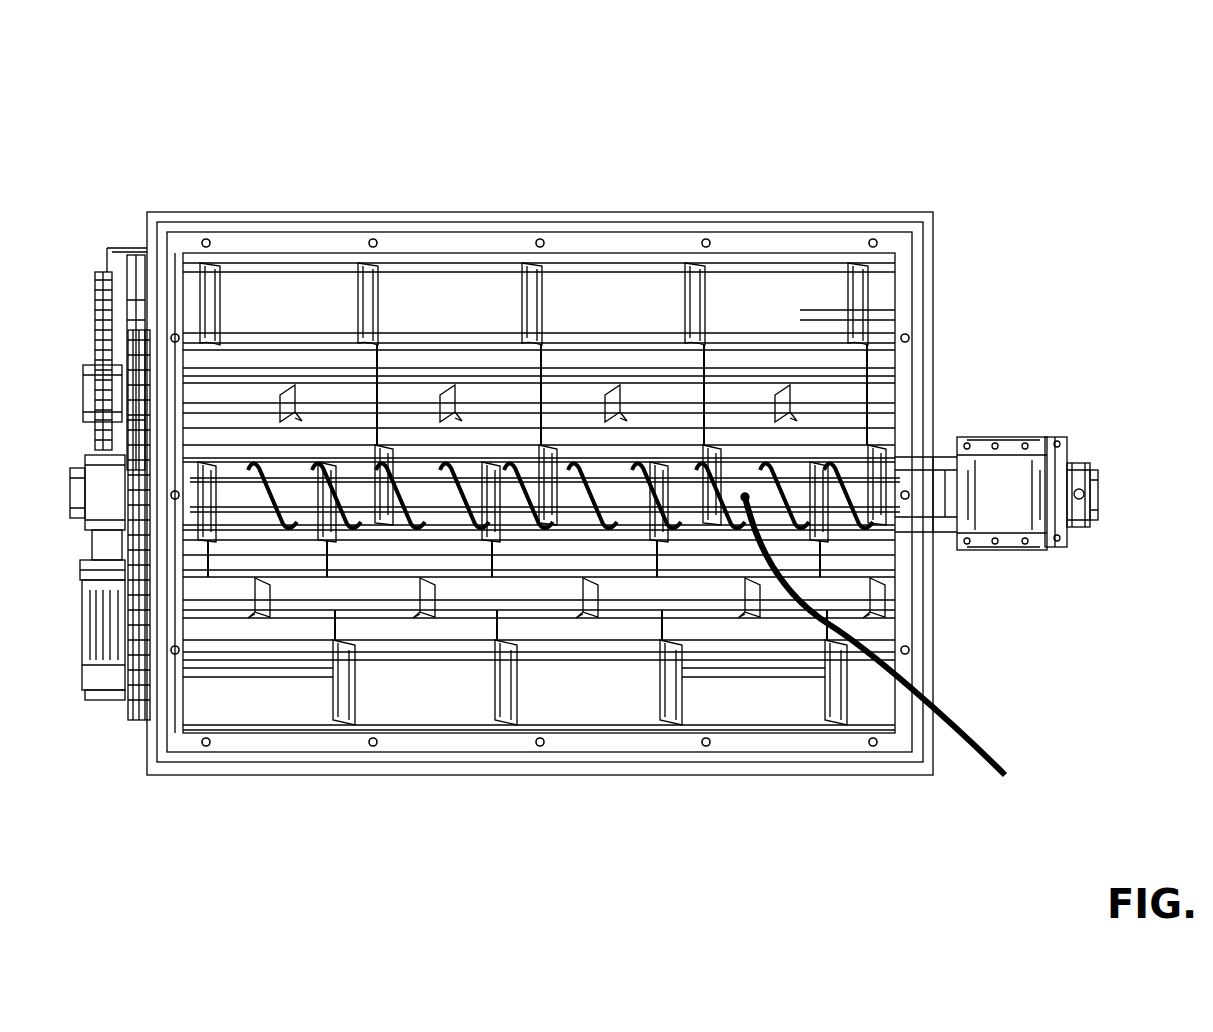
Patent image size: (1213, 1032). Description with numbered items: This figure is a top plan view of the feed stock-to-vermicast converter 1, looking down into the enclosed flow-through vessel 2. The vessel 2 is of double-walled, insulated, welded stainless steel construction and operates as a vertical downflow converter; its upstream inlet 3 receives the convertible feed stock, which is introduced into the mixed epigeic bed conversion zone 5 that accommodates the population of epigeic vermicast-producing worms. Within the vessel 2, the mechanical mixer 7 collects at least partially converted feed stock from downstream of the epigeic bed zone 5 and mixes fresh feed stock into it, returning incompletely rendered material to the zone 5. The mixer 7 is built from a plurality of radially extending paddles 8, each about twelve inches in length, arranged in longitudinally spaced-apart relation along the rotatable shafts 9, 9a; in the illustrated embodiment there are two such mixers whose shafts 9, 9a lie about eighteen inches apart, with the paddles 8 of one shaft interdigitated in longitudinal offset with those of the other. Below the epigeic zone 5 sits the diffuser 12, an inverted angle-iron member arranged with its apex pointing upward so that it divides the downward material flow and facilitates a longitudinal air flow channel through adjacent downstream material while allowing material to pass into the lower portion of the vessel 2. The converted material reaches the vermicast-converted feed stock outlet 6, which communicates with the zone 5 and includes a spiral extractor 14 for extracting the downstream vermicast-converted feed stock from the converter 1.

The feed stock-to-vermicast converter 1 is at (364, 92).
The enclosed flow-through vessel 2 is at (337, 212).
The upstream inlet 3 is at (573, 725).
The mixed epigeic bed conversion zone 5 is at (573, 268).
The vermicast-converted feed stock outlet 6 is at (1015, 550).
The mechanical mixer 7 is at (382, 358).
The radially extending paddles 8 is at (218, 273).
The rotatable shaft 9 is at (715, 386).
The rotatable shaft 9a is at (677, 595).
The diffuser 12 is at (890, 358).
The spiral extractor 14 is at (683, 178).